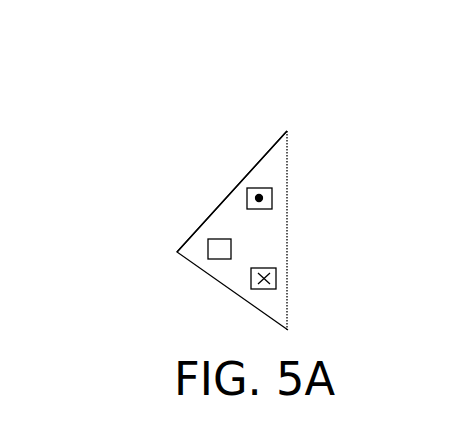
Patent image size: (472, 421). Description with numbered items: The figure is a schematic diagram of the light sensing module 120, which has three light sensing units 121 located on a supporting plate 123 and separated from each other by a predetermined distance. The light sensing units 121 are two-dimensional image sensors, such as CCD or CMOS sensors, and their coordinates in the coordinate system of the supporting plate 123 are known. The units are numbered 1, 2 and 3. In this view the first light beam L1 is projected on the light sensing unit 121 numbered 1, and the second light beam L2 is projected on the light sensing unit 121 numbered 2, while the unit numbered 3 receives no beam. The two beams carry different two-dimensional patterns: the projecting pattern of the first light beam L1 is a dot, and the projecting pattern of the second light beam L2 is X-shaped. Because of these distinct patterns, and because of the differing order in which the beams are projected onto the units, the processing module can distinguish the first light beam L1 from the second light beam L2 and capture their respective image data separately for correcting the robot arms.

The light sensing module 120 is at (92, 32).
The supporting plate 123 is at (266, 150).
The light sensing unit 121 is at (272, 196).
The light sensing unit numbered 1 is at (262, 186).
The light sensing unit numbered 2 is at (263, 267).
The light sensing unit numbered 3 is at (219, 236).
The first light beam L1 is at (259, 197).
The second light beam L2 is at (263, 278).